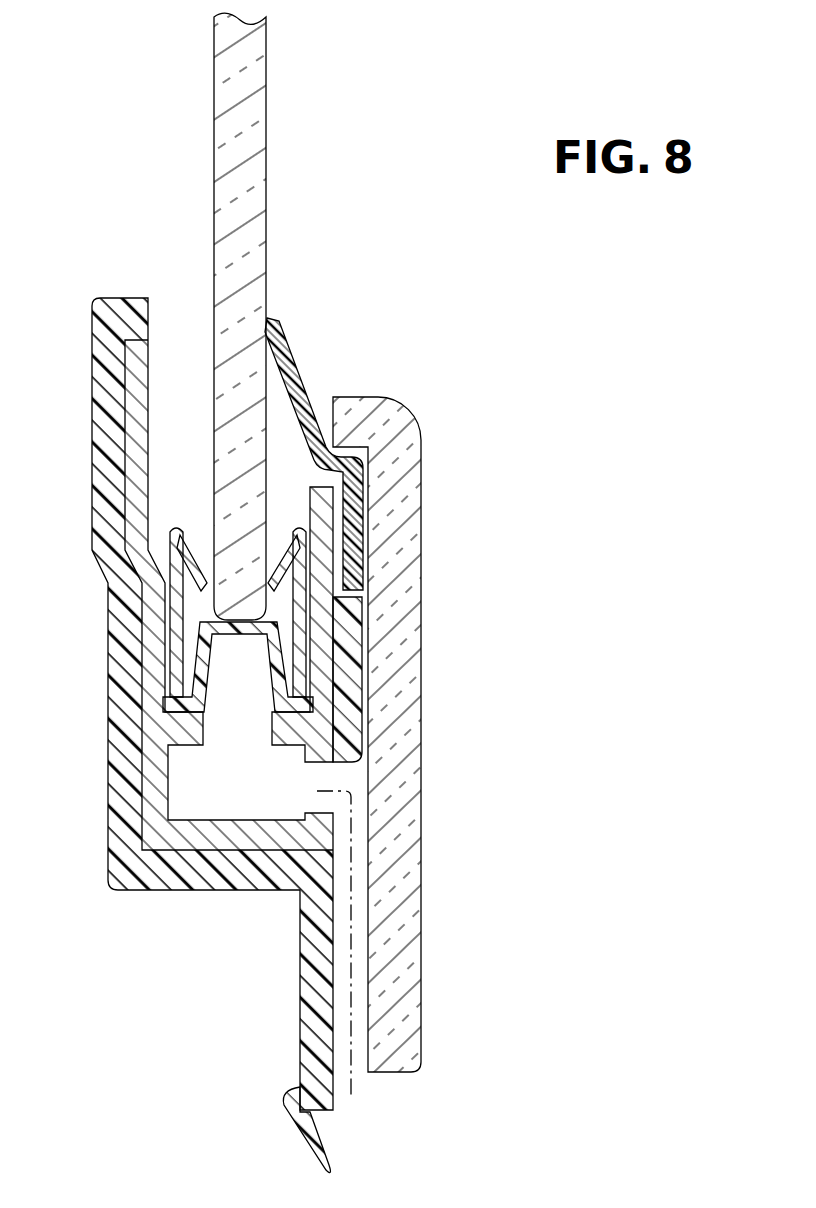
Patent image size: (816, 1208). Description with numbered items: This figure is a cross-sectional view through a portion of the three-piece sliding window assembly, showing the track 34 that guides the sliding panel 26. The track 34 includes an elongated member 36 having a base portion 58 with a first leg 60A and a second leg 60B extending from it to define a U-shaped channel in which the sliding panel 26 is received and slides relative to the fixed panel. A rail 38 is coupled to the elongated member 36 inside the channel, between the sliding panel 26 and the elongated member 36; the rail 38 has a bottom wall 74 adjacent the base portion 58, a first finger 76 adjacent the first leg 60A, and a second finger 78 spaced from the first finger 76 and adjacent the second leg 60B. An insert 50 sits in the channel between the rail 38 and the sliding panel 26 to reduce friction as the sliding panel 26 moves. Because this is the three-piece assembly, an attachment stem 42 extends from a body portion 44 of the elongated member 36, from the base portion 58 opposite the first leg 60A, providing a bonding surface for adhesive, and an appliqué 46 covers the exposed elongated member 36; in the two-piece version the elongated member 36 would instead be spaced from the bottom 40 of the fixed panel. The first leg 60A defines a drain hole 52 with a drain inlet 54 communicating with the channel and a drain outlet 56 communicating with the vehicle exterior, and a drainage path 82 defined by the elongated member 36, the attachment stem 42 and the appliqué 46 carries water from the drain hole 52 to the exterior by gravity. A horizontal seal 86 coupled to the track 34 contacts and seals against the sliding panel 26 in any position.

The sliding panel 26 is at (254, 122).
The track 34 is at (175, 735).
The elongated member 36 is at (179, 735).
The rail 38 is at (178, 420).
The bottom 40 is at (425, 1097).
The attachment stem 42 is at (320, 1040).
The body portion 44 is at (110, 897).
The appliqué 46 is at (410, 630).
The insert 50 is at (207, 688).
The drain hole 52 is at (348, 762).
The drain inlet 54 is at (300, 787).
The drain outlet 56 is at (370, 1085).
The base portion 58 is at (222, 885).
The first leg 60A is at (350, 533).
The second leg 60B is at (128, 630).
The bottom wall 74 is at (258, 838).
The first finger 76 is at (320, 592).
The second finger 78 is at (155, 680).
The drainage path 82 is at (352, 907).
The horizontal seal 86 is at (300, 378).